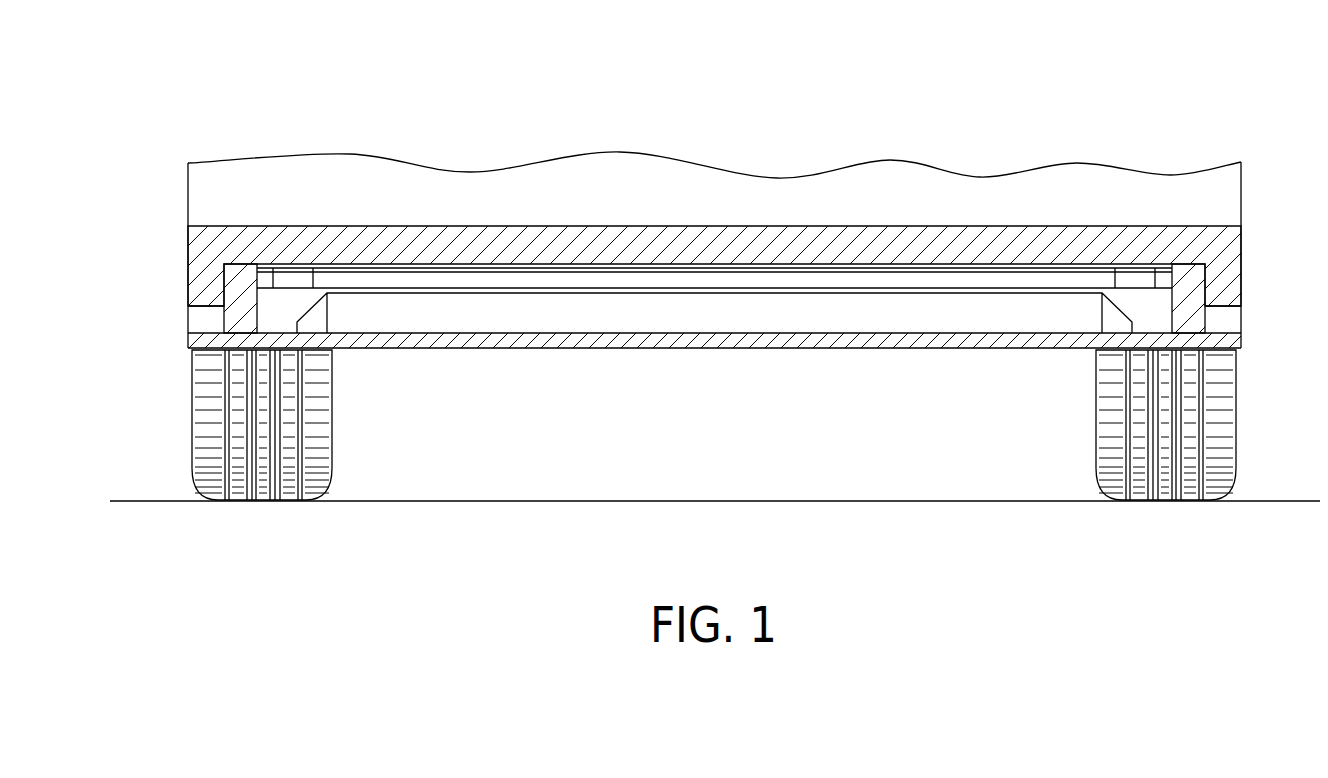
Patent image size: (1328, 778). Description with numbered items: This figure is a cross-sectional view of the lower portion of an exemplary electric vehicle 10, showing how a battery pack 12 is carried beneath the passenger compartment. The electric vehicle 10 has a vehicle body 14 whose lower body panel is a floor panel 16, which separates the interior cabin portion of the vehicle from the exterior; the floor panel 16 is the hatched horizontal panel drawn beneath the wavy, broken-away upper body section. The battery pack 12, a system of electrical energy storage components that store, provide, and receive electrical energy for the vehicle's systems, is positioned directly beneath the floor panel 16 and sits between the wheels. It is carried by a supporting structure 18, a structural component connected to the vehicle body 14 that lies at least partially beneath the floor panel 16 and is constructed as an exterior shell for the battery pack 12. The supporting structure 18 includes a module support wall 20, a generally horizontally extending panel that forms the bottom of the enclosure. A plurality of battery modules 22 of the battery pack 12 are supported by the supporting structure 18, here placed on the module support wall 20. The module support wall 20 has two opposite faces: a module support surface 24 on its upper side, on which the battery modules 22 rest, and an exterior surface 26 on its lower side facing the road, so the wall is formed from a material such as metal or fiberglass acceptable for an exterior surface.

The electric vehicle 10 is at (204, 118).
The battery pack 12 is at (447, 372).
The vehicle body 14 is at (207, 268).
The floor panel 16 is at (780, 253).
The supporting structure 18 is at (1248, 318).
The module support wall 20 is at (697, 343).
The battery modules 22 is at (832, 322).
The module support surface 24 is at (953, 324).
The exterior surface 26 is at (1040, 349).